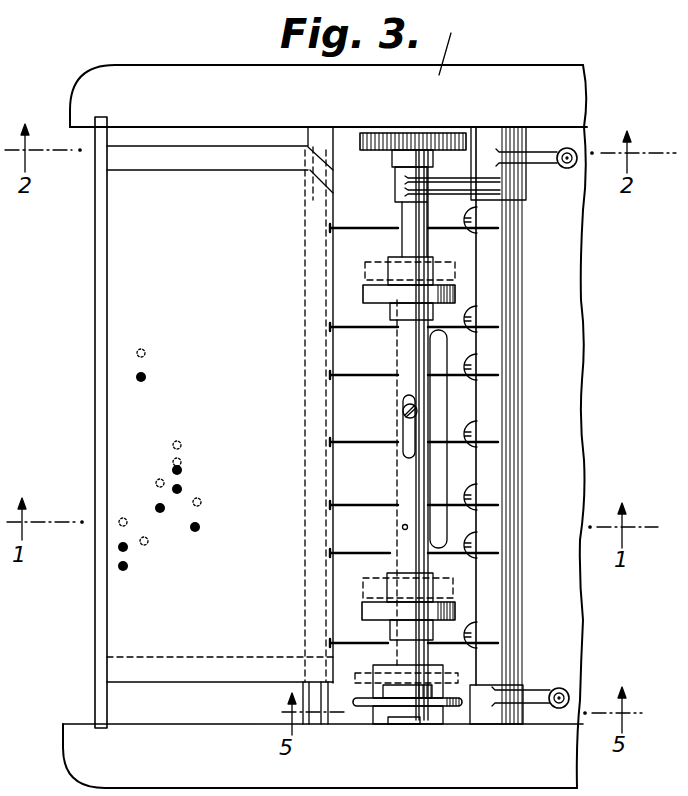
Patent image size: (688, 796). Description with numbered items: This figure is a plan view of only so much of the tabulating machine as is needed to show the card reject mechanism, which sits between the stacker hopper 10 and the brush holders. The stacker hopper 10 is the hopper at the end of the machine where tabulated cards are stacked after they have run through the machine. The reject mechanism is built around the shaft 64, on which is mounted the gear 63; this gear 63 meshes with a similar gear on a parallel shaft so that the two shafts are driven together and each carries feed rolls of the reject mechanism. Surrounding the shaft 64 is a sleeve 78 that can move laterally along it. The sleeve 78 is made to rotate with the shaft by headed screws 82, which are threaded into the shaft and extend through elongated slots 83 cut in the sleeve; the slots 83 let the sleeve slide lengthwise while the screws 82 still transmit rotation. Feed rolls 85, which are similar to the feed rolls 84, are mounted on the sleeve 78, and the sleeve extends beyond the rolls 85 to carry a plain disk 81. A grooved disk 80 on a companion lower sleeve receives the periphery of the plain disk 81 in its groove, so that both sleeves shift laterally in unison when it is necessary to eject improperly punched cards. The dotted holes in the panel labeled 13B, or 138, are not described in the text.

The stacker hopper 10 is at (256, 135).
The perforated panel 13B is at (175, 460).
The perforated panel 138 is at (175, 460).
The gear 63 is at (444, 137).
The shaft 64 is at (405, 246).
The feed rolls 84 is at (378, 292).
The headed screws 82 is at (402, 411).
The elongated slots 83 is at (403, 440).
The sleeve 78 is at (402, 527).
The feed rolls 85 is at (377, 609).
The plain disk 81 is at (362, 707).
The grooved disk 80 is at (433, 710).